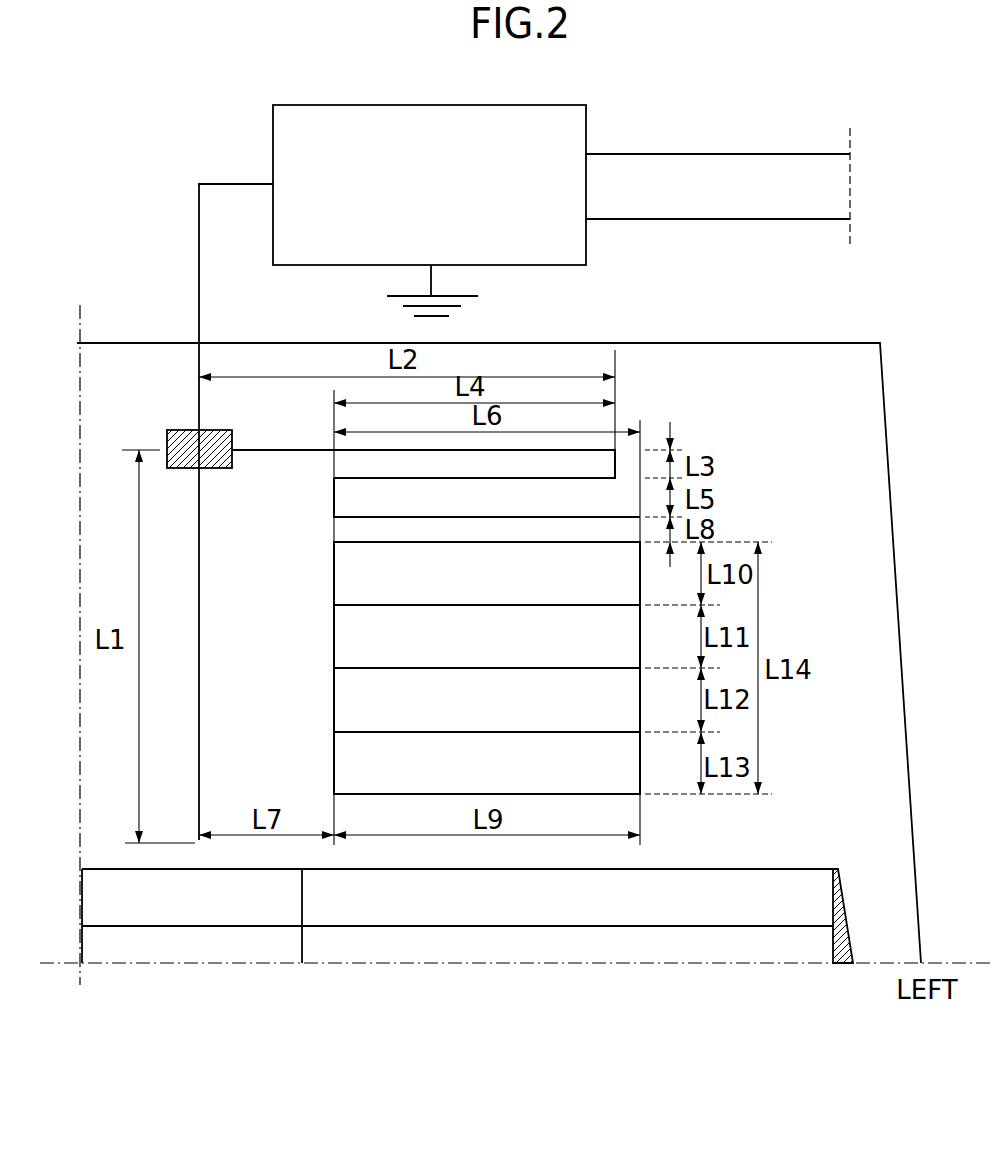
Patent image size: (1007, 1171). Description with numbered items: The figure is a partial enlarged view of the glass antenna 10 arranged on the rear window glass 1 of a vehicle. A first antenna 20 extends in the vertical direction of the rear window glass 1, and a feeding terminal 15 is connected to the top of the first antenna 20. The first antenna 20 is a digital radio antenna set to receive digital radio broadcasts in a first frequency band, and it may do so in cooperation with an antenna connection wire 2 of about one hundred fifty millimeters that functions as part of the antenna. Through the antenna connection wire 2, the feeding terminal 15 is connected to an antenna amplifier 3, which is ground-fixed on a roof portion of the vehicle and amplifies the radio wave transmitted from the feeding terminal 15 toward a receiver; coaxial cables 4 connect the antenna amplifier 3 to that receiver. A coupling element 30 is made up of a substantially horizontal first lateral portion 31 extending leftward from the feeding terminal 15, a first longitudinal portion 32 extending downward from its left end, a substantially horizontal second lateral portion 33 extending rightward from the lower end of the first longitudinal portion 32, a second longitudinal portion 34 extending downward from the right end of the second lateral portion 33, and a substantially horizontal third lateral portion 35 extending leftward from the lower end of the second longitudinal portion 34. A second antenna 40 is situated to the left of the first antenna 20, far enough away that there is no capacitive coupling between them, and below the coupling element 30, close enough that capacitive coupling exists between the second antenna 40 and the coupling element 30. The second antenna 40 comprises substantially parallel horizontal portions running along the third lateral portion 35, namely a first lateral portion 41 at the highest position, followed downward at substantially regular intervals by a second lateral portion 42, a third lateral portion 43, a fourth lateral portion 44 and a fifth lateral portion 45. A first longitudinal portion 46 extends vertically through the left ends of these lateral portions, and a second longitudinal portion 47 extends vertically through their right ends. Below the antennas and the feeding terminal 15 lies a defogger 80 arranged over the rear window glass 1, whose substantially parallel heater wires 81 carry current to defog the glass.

The rear window glass 1 is at (900, 668).
The antenna connection wire 2 is at (199, 256).
The antenna amplifier 3 is at (507, 105).
The coaxial cables 4 is at (693, 152).
The glass antenna 10 is at (747, 427).
The feeding terminal 15 is at (167, 439).
The first antenna 20 is at (198, 735).
The coupling element 30 is at (282, 445).
The first lateral portion 31 is at (591, 448).
The first longitudinal portion 32 is at (618, 466).
The second lateral portion 33 is at (344, 478).
The second longitudinal portion 34 is at (334, 500).
The third lateral portion 35 is at (346, 517).
The second antenna 40 is at (332, 694).
The first lateral portion 41 is at (450, 543).
The second lateral portion 42 is at (450, 607).
The third lateral portion 43 is at (450, 670).
The fourth lateral portion 44 is at (450, 734).
The fifth lateral portion 45 is at (545, 797).
The first longitudinal portion 46 is at (640, 764).
The second longitudinal portion 47 is at (334, 636).
The defogger 80 is at (849, 896).
The heater wires 81 is at (795, 868).